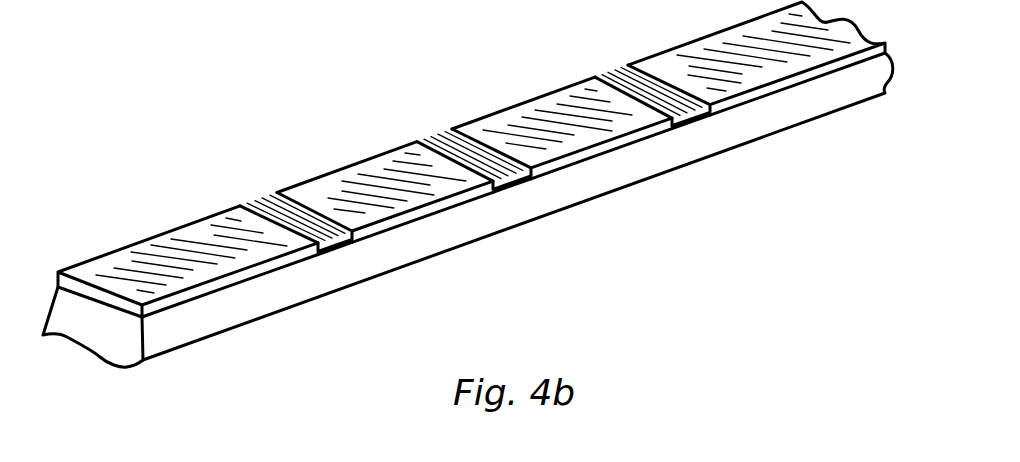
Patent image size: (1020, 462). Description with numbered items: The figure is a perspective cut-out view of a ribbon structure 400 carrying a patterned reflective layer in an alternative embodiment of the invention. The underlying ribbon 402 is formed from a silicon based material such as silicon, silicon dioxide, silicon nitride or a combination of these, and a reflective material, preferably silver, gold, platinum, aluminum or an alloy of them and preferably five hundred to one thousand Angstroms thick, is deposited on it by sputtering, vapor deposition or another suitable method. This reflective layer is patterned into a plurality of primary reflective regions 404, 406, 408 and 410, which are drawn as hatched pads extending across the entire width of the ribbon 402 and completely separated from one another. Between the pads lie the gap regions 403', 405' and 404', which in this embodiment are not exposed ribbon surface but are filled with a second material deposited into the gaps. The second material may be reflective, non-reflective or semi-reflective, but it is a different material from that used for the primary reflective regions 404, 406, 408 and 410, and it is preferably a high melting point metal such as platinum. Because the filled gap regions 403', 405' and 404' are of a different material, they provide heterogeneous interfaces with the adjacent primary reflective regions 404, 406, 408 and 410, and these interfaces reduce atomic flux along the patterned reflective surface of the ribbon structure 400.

The ribbon structure 400 is at (179, 63).
The ribbon 402 is at (96, 326).
The primary reflective region 404 is at (188, 300).
The gap region 403' is at (344, 260).
The primary reflective region 406 is at (420, 193).
The gap region 405' is at (517, 202).
The primary reflective region 408 is at (603, 130).
The gap region 404' is at (692, 140).
The primary reflective region 410 is at (772, 68).